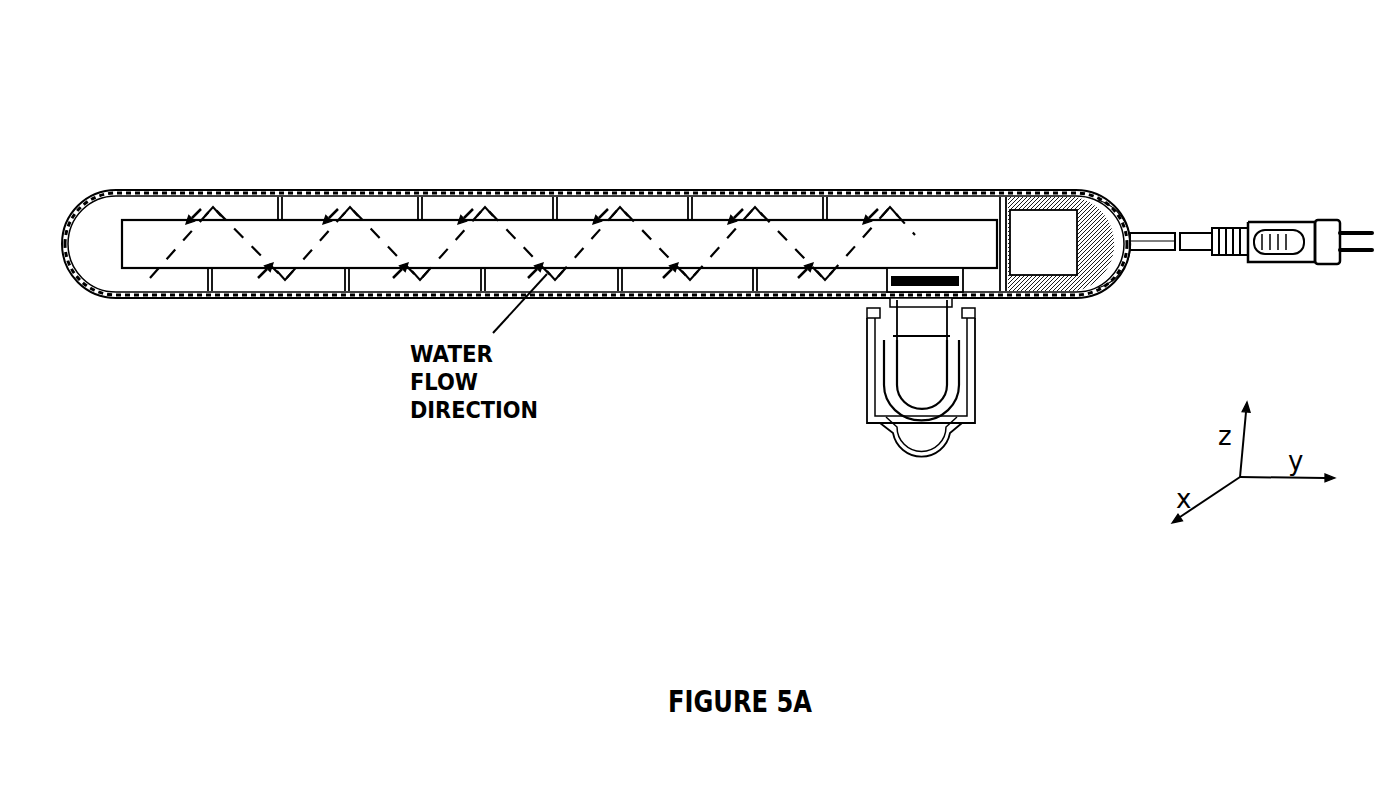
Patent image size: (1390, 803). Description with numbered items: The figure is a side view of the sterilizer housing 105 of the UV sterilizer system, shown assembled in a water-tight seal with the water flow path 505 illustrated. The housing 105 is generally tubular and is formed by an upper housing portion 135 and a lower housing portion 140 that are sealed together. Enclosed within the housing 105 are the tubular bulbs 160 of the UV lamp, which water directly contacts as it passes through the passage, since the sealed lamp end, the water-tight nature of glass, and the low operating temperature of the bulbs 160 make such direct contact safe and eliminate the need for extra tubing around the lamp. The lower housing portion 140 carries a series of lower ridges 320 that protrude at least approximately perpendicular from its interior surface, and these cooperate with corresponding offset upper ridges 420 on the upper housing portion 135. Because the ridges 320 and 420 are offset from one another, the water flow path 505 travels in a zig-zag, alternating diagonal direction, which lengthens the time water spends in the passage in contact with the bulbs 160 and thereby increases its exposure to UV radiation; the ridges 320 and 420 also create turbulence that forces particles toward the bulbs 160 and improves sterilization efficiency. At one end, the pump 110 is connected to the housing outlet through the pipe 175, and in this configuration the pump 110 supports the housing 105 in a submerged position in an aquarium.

The sterilizer housing 105 is at (593, 264).
The pump 110 is at (974, 398).
The upper housing portion 135 is at (167, 190).
The lower housing portion 140 is at (132, 298).
The bulbs 160 is at (733, 258).
The pipe 175 is at (917, 365).
The lower ridges 320 is at (346, 278).
The upper ridges 420 is at (272, 196).
The water flow path 505 is at (517, 240).